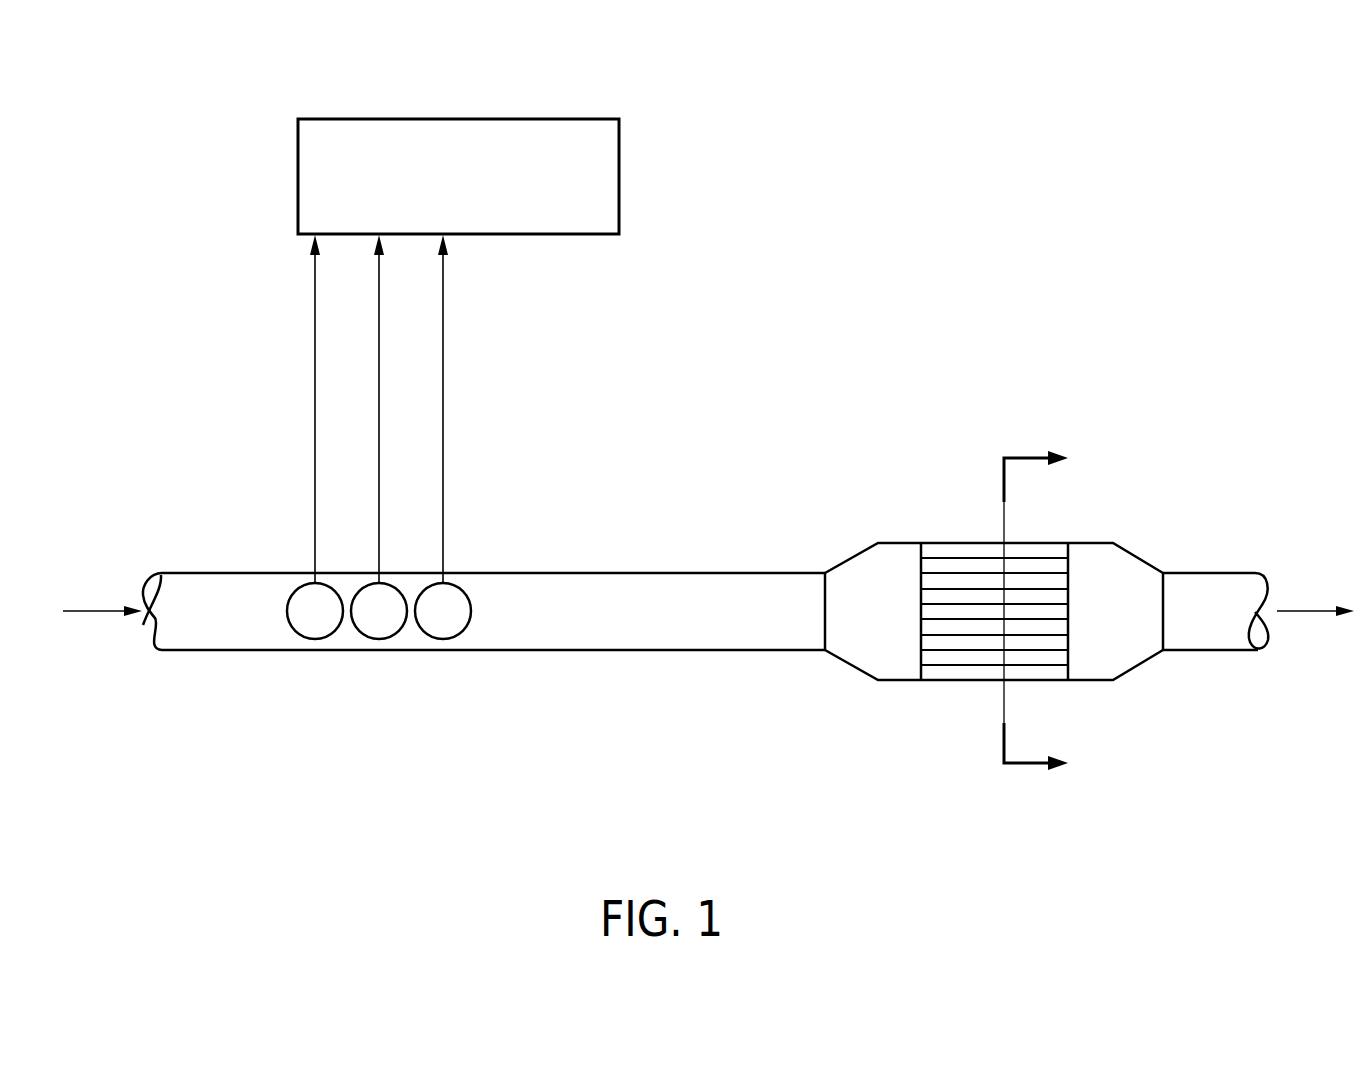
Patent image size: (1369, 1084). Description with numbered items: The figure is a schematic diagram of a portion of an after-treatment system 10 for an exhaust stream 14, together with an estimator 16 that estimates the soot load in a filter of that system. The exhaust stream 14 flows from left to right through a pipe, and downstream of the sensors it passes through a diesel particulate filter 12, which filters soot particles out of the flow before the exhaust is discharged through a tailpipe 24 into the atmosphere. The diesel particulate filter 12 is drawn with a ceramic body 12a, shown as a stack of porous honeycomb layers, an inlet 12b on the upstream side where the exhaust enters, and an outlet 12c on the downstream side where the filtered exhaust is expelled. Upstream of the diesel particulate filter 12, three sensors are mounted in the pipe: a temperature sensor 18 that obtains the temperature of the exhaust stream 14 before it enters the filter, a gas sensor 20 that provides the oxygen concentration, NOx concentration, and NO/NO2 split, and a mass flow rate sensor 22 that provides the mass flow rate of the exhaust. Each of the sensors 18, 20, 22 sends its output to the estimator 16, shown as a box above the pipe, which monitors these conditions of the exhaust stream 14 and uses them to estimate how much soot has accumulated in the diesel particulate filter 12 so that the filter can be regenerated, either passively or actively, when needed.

The after-treatment system 10 is at (780, 655).
The diesel particulate filter 12 is at (998, 612).
The ceramic body 12a is at (955, 550).
The inlet 12b is at (921, 568).
The outlet 12c is at (1068, 568).
The exhaust stream 14 is at (92, 606).
The estimator 16 is at (462, 118).
The temperature sensor 18 is at (315, 640).
The gas sensor 20 is at (378, 640).
The mass flow rate sensor 22 is at (445, 640).
The tailpipe 24 is at (1218, 652).